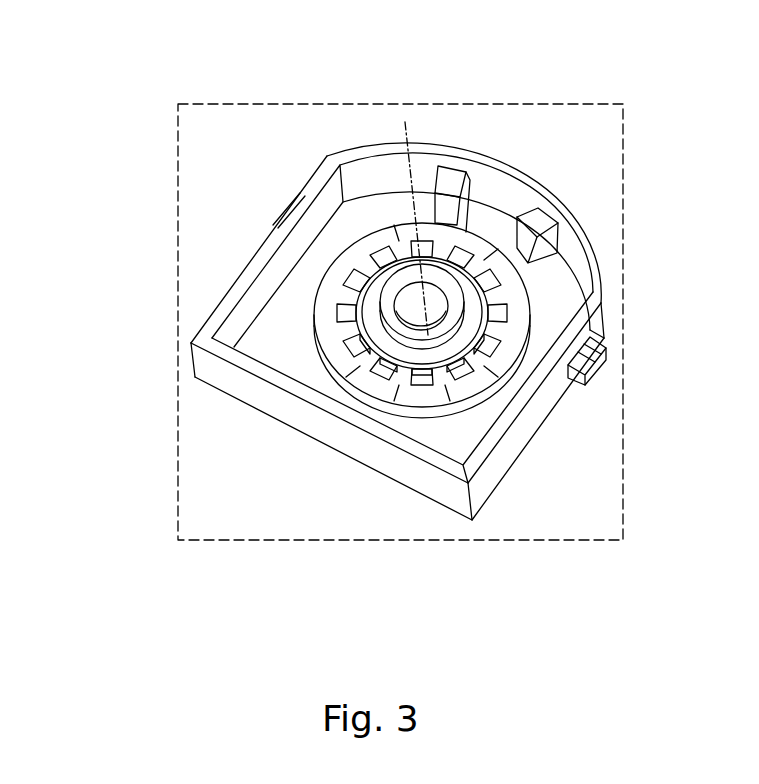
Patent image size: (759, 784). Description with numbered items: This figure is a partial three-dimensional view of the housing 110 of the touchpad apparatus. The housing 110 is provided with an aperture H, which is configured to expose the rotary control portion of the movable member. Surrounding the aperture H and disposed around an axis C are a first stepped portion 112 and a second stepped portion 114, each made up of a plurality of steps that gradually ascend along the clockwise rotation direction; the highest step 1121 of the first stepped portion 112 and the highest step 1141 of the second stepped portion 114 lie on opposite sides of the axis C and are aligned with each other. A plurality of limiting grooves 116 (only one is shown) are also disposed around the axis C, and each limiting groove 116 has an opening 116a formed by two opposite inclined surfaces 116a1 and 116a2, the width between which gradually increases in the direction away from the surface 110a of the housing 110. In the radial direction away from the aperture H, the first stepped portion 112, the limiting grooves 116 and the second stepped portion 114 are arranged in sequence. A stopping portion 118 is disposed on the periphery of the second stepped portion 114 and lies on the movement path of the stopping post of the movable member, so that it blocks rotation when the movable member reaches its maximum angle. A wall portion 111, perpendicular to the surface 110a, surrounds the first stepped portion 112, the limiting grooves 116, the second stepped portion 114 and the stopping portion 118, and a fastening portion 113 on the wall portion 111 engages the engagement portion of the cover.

The housing 110 is at (147, 82).
The surface of the housing 110a is at (588, 482).
The wall portion 111 is at (540, 405).
The first stepped portion 112 is at (495, 430).
The highest step of the first stepped portion 1121 is at (393, 352).
The fastening portion 113 is at (590, 362).
The second stepped portion 114 is at (318, 323).
The highest step of the second stepped portion 1141 is at (478, 250).
The limiting groove 116 is at (519, 409).
The opening 116a is at (524, 313).
The inclined surface 116a1 is at (507, 307).
The inclined surface 116a2 is at (632, 341).
The stopping portion 118 is at (453, 176).
The axis C is at (405, 137).
The aperture H is at (324, 300).